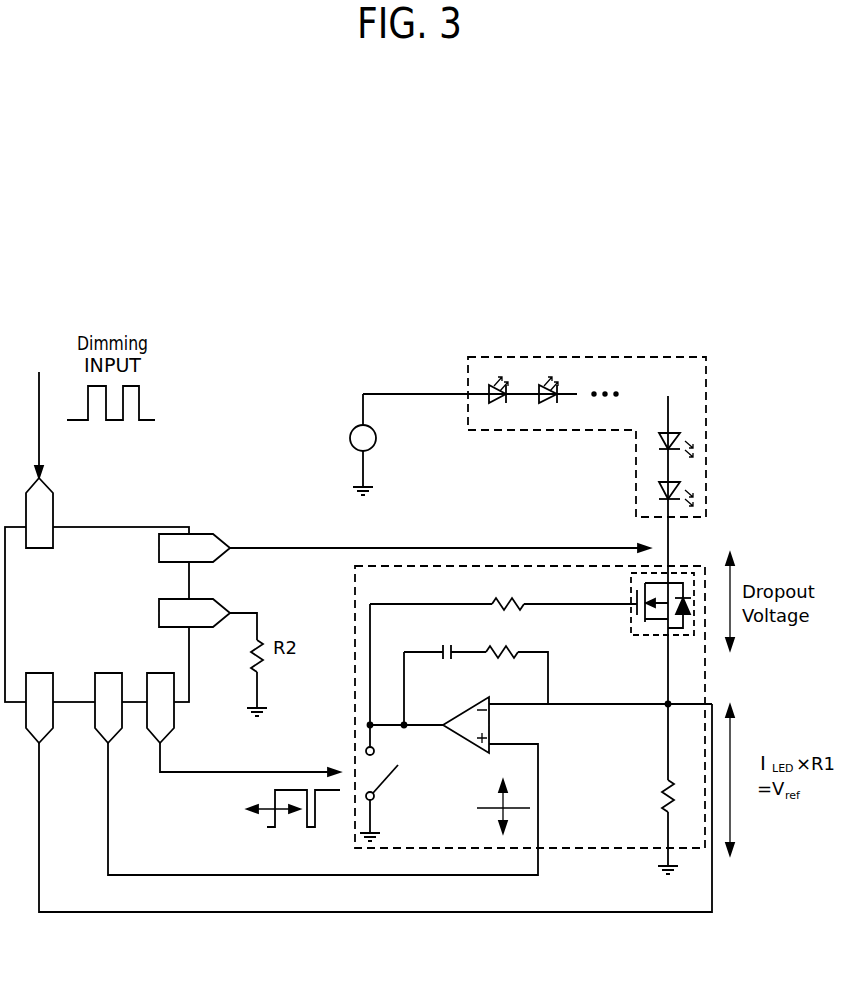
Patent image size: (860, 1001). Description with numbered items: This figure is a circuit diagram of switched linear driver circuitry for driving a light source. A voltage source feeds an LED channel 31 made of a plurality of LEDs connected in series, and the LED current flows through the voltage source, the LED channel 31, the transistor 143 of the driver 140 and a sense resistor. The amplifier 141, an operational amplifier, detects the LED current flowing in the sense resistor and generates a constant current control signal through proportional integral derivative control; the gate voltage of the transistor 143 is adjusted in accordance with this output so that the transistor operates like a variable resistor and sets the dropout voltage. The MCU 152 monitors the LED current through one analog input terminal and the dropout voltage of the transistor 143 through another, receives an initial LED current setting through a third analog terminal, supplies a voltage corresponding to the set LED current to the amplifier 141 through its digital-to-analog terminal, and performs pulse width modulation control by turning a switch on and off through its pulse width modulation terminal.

The LED channel 31 is at (584, 357).
The driver 140 is at (603, 849).
The amplifier OP1 141 is at (466, 742).
The transistor Q1 143 is at (694, 573).
The MCU 152 is at (127, 527).